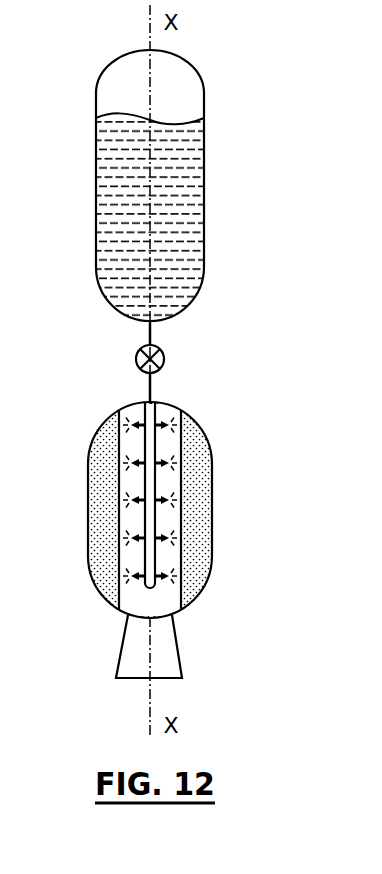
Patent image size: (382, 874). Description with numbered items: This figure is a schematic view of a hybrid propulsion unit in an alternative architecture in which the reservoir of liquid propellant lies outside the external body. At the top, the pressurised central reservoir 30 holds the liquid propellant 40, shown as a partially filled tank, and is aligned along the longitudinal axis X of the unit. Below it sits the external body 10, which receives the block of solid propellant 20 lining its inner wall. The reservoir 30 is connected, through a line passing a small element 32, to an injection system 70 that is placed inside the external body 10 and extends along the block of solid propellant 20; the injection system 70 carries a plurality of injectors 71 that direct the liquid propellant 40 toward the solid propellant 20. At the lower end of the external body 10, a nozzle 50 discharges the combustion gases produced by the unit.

The external body 10 is at (88, 467).
The solid propellant 20 is at (98, 521).
The central reservoir 30 is at (96, 172).
The valve 32 is at (138, 364).
The liquid propellant 40 is at (104, 232).
The nozzle 50 is at (121, 660).
The injection system 70 is at (156, 484).
The injectors 71 is at (164, 538).